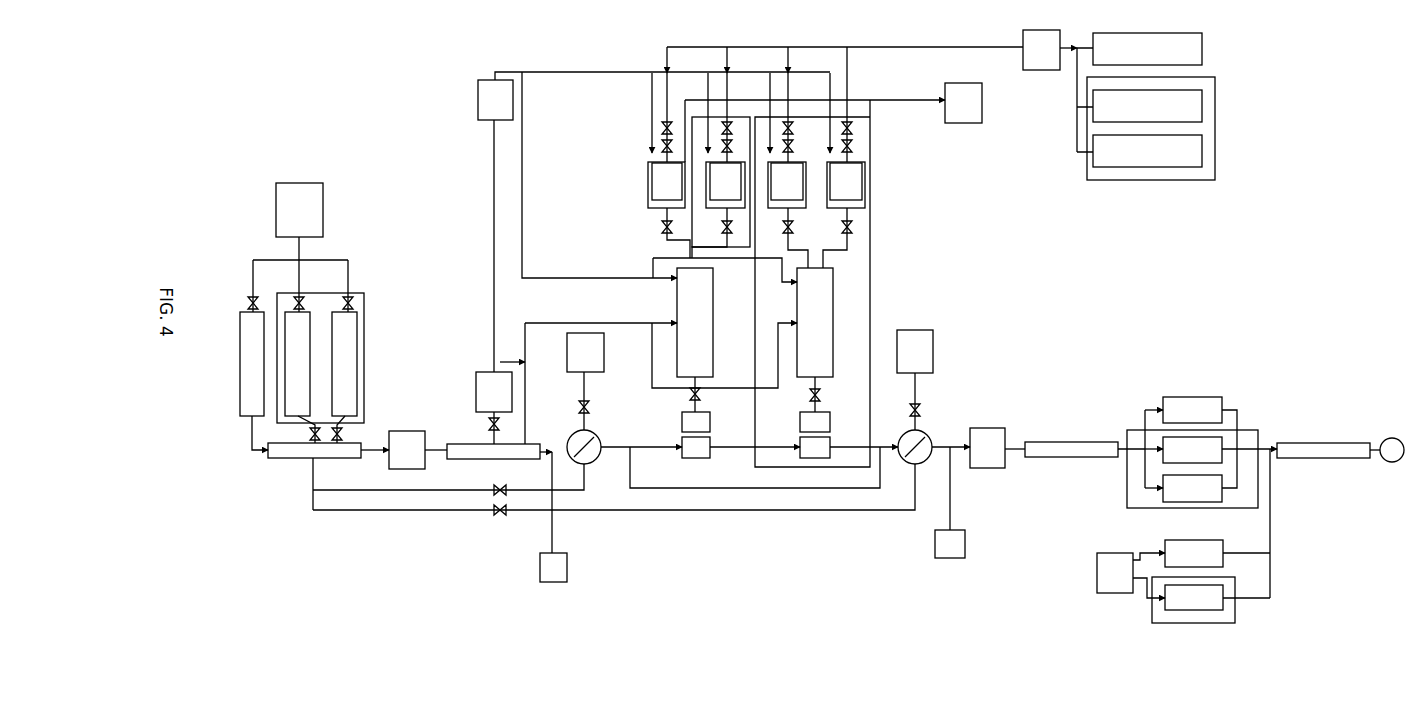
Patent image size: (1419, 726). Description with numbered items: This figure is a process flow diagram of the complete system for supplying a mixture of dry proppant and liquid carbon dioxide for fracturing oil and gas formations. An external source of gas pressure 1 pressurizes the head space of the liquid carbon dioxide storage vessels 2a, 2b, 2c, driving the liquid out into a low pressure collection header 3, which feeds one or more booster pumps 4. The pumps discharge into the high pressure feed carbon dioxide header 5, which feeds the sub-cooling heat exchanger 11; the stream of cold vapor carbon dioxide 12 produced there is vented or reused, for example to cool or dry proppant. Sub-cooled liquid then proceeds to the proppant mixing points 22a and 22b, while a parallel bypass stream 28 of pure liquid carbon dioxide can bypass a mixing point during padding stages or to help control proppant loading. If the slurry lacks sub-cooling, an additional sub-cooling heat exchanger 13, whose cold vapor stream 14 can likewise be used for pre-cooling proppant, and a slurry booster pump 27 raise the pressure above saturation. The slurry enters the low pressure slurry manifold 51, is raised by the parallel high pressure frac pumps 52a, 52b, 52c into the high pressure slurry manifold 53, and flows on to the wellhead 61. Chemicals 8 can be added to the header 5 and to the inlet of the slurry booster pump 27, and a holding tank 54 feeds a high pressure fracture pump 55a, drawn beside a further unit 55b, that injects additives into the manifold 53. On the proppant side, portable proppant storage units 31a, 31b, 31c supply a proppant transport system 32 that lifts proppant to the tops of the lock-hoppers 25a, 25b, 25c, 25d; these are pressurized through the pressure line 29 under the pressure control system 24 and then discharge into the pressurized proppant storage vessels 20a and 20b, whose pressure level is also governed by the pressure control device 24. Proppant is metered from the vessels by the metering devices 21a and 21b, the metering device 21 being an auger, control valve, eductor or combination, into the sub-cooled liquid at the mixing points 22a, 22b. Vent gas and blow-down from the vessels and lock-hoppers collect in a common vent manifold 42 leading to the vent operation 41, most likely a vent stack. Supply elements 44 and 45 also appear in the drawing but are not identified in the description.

The external source of gas pressure 1 is at (299, 210).
The storage vessel 2a is at (252, 364).
The storage vessel 2b is at (297, 364).
The storage vessel 2c is at (344, 364).
The low pressure collection header 3 is at (308, 459).
The booster pump 4 is at (407, 450).
The high pressure feed carbon dioxide header 5 is at (484, 460).
The chemicals 8 is at (752, 556).
The sub-cooling heat exchanger 11 is at (589, 463).
The stream of cold vapor carbon dioxide 12 is at (590, 404).
The additional sub-cooling heat exchanger 13 is at (919, 464).
The cold vapor stream 14 is at (919, 405).
The pressurized proppant storage vessel 20a is at (695, 322).
The pressurized proppant storage vessel 20b is at (815, 322).
The metering device 21 is at (494, 392).
The metering device 21a is at (682, 421).
The metering device 21b is at (800, 421).
The proppant mixing point 22a is at (701, 460).
The proppant mixing point 22b is at (820, 460).
The pressure control system 24 is at (495, 100).
The lock-hopper 25a is at (666, 185).
The lock-hopper 25b is at (725, 185).
The lock-hopper 25c is at (787, 185).
The lock-hopper 25d is at (846, 185).
The slurry booster pump 27 is at (987, 448).
The bypass stream 28 is at (702, 395).
The pressure line 29 is at (652, 164).
The portable proppant storage unit 31a is at (1147, 49).
The portable proppant storage unit 31b is at (1147, 106).
The portable proppant storage unit 31c is at (1147, 151).
The proppant transport system 32 is at (1041, 50).
The vent operation 41 is at (963, 103).
The common vent manifold 42 is at (815, 90).
The gas supply 44 is at (585, 352).
The gas supply 45 is at (915, 351).
The low pressure slurry manifold 51 is at (1065, 460).
The high pressure frac pump 52a is at (1192, 410).
The high pressure frac pump 52b is at (1192, 450).
The high pressure frac pump 52c is at (1192, 488).
The high pressure slurry manifold 53 is at (1316, 460).
The holding tank 54 is at (1115, 573).
The high pressure fracture pump 55a is at (1194, 553).
The cleaning unit 55b is at (1193, 600).
The wellhead 61 is at (1389, 462).